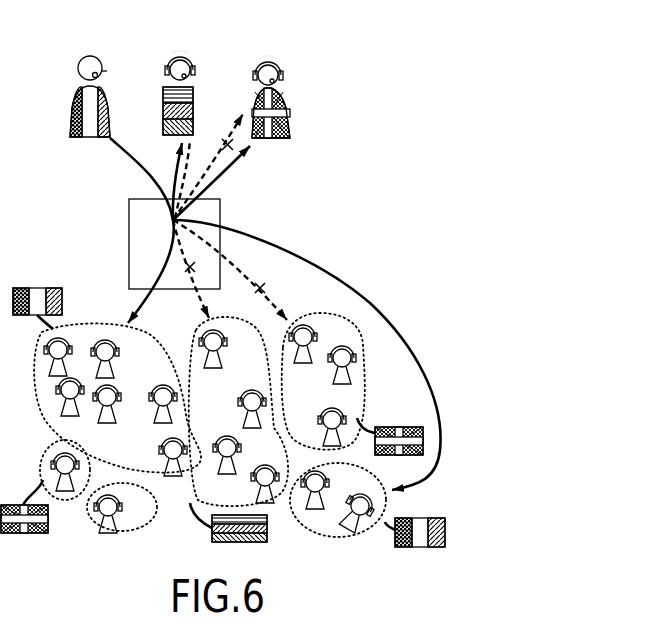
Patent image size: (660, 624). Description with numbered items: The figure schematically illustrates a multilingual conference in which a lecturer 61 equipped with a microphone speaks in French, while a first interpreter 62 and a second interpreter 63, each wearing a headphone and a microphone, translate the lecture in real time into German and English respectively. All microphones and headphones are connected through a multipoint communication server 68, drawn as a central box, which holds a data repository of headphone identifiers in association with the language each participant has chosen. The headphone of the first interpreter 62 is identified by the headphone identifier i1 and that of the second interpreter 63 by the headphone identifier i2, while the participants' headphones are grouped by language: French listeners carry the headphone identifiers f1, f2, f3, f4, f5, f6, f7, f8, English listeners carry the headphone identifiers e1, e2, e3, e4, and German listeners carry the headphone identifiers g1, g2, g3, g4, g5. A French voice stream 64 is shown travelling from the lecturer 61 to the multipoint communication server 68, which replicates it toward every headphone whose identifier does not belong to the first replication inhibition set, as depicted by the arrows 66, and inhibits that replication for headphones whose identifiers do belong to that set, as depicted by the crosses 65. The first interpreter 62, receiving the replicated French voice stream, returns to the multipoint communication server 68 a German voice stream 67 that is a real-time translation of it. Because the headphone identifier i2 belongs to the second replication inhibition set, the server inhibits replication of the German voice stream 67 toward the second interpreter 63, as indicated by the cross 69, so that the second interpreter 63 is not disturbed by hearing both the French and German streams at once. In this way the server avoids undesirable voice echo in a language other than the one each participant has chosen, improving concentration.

The lecturer 61 is at (76, 95).
The first interpreter 62 is at (163, 103).
The second interpreter 63 is at (293, 110).
The French voice stream 64 is at (126, 154).
The crosses 65 is at (262, 288).
The arrows 66 is at (177, 173).
The German voice stream 67 is at (193, 185).
The multipoint communication server 68 is at (220, 232).
The cross 69 is at (226, 138).
The headphone identifier i1 is at (181, 57).
The headphone identifier i2 is at (278, 55).
The headphone identifier f1 is at (60, 340).
The headphone identifier f2 is at (104, 342).
The headphone identifier f3 is at (60, 388).
The headphone identifier f4 is at (114, 389).
The headphone identifier f5 is at (168, 388).
The headphone identifier f6 is at (165, 443).
The headphone identifier f7 is at (326, 473).
The headphone identifier f8 is at (352, 485).
The headphone identifier e1 is at (300, 328).
The headphone identifier e2 is at (348, 348).
The headphone identifier e3 is at (341, 413).
The headphone identifier e4 is at (58, 457).
The headphone identifier g1 is at (115, 497).
The headphone identifier g2 is at (227, 438).
The headphone identifier g3 is at (218, 332).
The headphone identifier g4 is at (251, 392).
The headphone identifier g5 is at (272, 466).